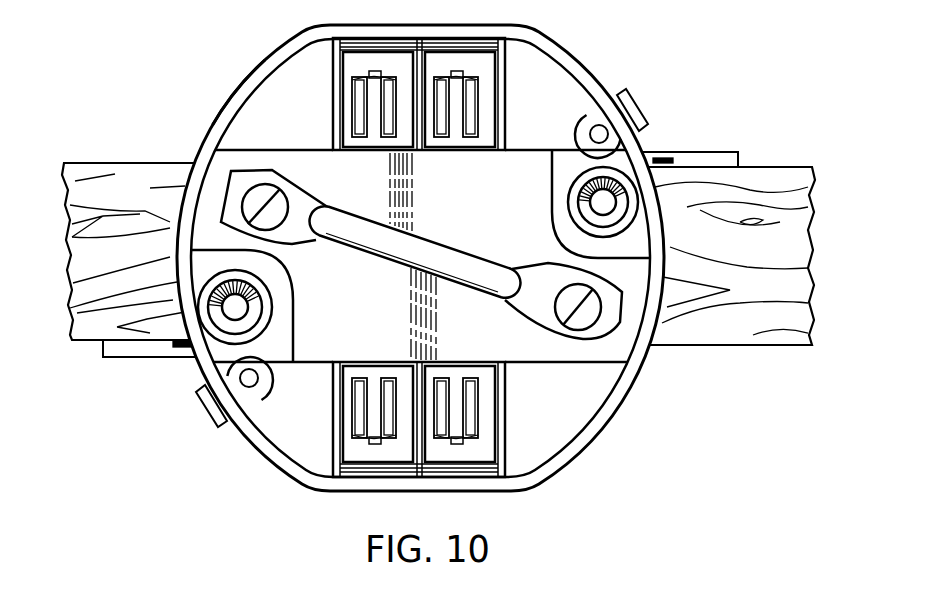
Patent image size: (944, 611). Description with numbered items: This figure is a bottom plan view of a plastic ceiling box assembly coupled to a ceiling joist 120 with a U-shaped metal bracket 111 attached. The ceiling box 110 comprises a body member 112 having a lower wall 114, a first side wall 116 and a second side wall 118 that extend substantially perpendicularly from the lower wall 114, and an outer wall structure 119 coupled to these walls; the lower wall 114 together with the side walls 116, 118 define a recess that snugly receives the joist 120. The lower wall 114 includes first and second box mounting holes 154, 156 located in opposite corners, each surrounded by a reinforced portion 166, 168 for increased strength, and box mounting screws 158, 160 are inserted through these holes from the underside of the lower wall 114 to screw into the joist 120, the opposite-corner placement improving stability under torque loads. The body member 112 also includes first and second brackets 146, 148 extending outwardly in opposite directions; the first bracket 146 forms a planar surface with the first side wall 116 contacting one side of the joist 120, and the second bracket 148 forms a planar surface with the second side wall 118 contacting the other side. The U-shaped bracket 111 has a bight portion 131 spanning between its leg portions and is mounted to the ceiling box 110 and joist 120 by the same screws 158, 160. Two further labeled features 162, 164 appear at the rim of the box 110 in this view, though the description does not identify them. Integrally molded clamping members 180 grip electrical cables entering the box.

The ceiling box 110 is at (600, 433).
The U-shaped metal bracket 111 is at (468, 296).
The body member 112 is at (643, 370).
The lower wall 114 is at (508, 241).
The first side wall 116 is at (528, 363).
The second side wall 118 is at (417, 94).
The outer wall structure 119 is at (257, 98).
The ceiling joist 120 is at (780, 165).
The bight portion 131 is at (443, 250).
The first bracket 146 is at (137, 358).
The second bracket 148 is at (715, 152).
The first box mounting hole 154 is at (242, 307).
The second box mounting hole 156 is at (597, 210).
The box mounting screw 158 is at (288, 202).
The box mounting screw 160 is at (587, 330).
The lower mounting ear 162 is at (245, 382).
The upper mounting ear 164 is at (604, 127).
The reinforced portion 166 is at (293, 340).
The reinforced portion 168 is at (552, 173).
The clamping members 180 is at (337, 63).